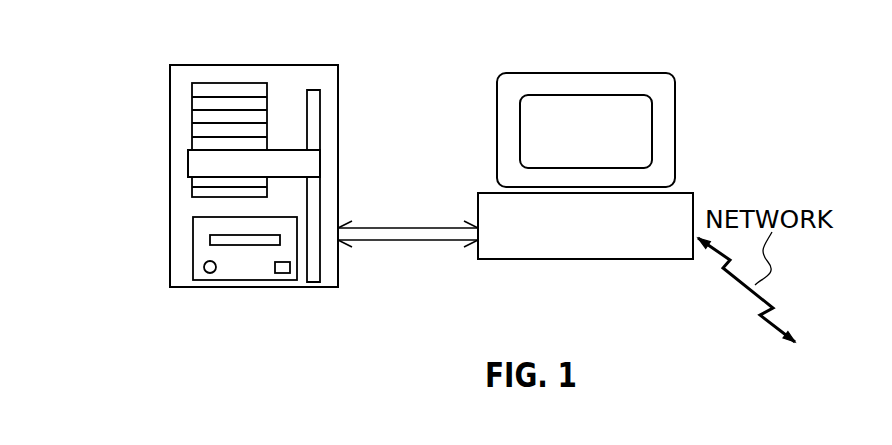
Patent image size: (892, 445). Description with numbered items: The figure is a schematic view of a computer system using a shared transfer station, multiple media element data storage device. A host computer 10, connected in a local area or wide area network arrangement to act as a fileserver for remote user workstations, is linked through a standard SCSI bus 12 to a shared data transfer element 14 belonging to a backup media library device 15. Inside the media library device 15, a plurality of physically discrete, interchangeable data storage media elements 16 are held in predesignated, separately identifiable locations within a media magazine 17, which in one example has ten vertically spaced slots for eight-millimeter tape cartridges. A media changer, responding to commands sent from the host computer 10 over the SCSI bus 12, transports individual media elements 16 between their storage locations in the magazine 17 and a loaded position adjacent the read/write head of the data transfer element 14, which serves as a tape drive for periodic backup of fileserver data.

The host computer 10 is at (699, 108).
The SCSI bus 12 is at (408, 273).
The data transfer element 14 is at (247, 266).
The media library device 15 is at (148, 233).
The data storage media elements 16 is at (193, 137).
The media magazine 17 is at (390, 155).